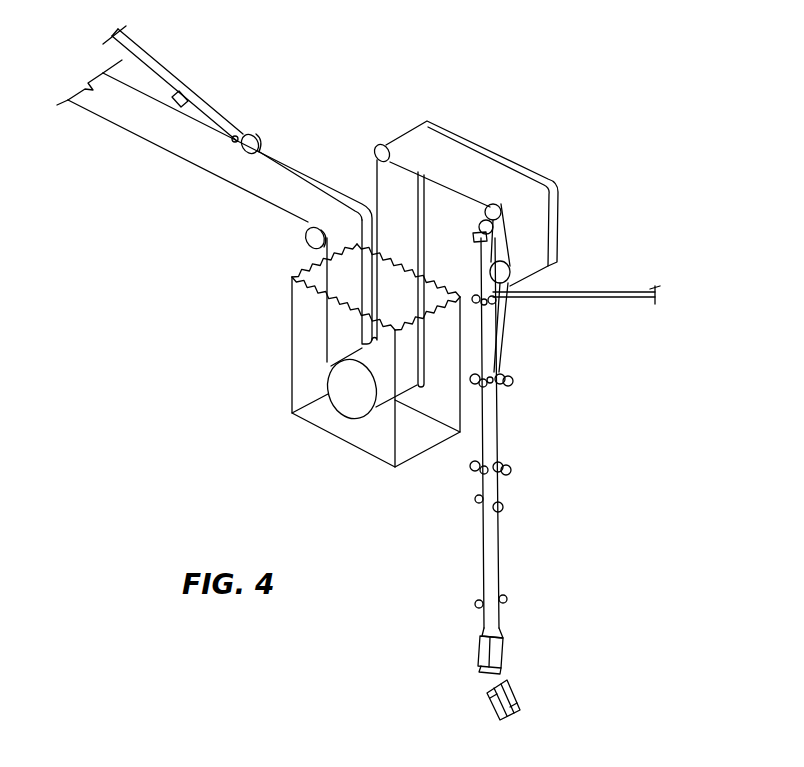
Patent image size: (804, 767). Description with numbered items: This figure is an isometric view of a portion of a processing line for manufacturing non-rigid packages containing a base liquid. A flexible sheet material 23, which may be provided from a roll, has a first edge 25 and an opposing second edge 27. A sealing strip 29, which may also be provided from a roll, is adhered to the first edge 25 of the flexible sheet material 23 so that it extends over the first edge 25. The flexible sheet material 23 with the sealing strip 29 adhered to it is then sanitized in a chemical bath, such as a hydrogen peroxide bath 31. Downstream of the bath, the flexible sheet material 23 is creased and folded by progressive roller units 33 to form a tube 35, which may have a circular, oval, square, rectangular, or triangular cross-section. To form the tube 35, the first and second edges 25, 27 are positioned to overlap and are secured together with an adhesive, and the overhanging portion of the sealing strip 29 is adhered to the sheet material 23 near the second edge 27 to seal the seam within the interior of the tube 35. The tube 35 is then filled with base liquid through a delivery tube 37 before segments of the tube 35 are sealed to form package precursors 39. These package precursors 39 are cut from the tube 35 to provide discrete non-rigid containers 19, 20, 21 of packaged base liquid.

The non-rigid container 19 is at (610, 695).
The non-rigid container 20 is at (610, 695).
The non-rigid container 21 is at (517, 695).
The flexible sheet material 23 is at (104, 131).
The first edge 25 is at (151, 88).
The second edge 27 is at (168, 130).
The sealing strip 29 is at (247, 131).
The hydrogen peroxide bath 31 is at (303, 360).
The progressive roller units 33 is at (505, 322).
The tube 35 is at (512, 553).
The delivery tube 37 is at (611, 292).
The package precursor 39 is at (516, 650).